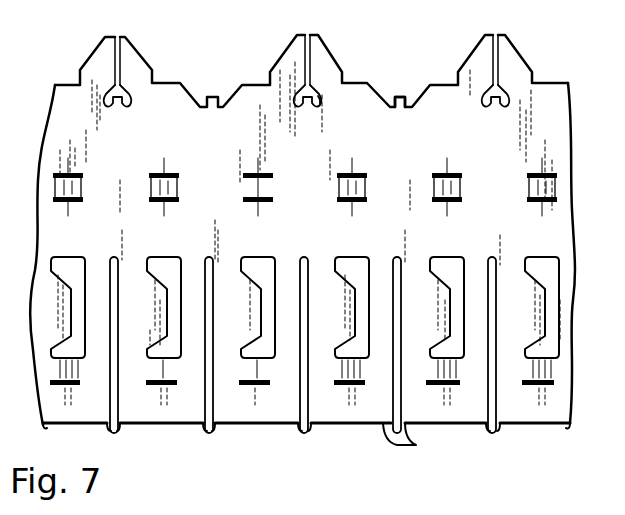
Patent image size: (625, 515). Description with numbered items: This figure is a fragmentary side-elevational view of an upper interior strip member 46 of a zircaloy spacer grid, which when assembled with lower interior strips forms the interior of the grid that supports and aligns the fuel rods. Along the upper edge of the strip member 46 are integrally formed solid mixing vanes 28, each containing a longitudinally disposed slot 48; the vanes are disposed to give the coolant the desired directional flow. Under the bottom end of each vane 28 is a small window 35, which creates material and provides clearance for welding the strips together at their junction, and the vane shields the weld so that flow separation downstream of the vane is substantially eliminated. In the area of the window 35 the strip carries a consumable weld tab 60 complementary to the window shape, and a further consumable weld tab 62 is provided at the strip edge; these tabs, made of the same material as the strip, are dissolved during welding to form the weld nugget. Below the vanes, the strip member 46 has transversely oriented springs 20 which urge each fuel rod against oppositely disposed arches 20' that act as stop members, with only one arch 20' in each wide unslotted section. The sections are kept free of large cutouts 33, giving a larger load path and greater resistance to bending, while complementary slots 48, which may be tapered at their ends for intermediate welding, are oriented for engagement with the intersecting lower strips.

The mixing vane 28 is at (124, 68).
The cutout 33 is at (172, 190).
The window 35 is at (322, 106).
The consumable weld tab 60 is at (492, 108).
The spring 20 is at (342, 258).
The arch 20' is at (367, 302).
The upper strip member 46 is at (320, 240).
The slot 48 is at (497, 316).
The consumable weld tab 62 is at (416, 445).